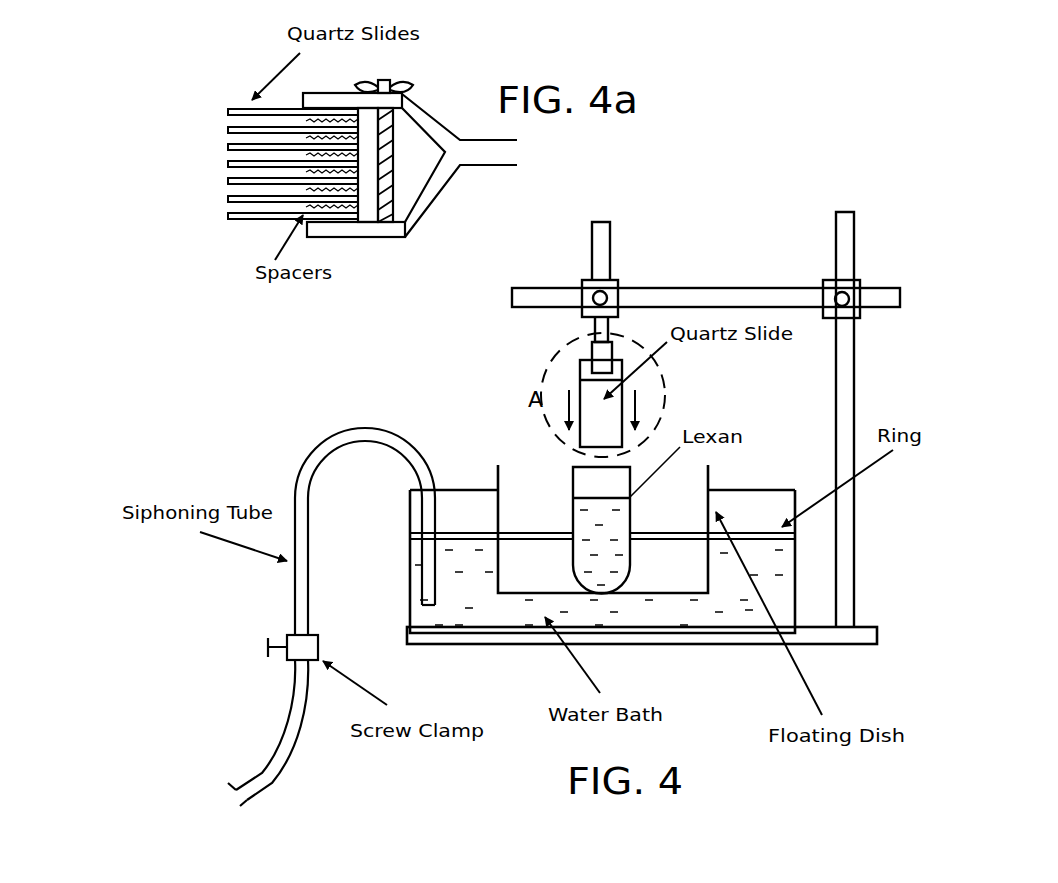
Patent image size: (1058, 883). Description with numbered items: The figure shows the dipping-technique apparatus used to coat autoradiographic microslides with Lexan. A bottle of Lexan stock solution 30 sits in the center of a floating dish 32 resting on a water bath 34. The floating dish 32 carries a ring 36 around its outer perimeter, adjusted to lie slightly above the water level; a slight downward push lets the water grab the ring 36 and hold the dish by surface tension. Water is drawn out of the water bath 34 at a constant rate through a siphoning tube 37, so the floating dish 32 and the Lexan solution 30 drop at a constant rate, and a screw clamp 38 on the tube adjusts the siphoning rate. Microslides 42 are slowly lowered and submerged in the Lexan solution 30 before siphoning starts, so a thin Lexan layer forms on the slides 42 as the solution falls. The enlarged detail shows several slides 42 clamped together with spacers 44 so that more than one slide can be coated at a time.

In FIG. 4, the Lexan stock solution 30 is at (573, 505).
In FIG. 4, the floating dish 32 is at (710, 467).
In FIG. 4, the water bath 34 is at (472, 552).
In FIG. 4, the ring 36 is at (795, 534).
In FIG. 4, the siphoning tube 37 is at (313, 458).
In FIG. 4, the screw clamp 38 is at (308, 646).
In FIG. 4a, the microslides 42 is at (228, 112).
In FIG. 4, the microslides 42 is at (608, 408).
In FIG. 4a, the spacers 44 is at (318, 121).